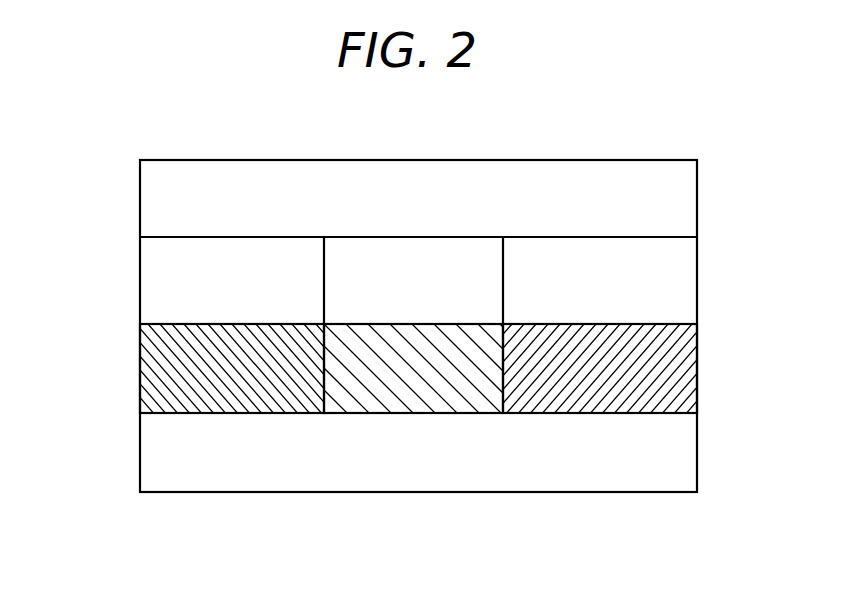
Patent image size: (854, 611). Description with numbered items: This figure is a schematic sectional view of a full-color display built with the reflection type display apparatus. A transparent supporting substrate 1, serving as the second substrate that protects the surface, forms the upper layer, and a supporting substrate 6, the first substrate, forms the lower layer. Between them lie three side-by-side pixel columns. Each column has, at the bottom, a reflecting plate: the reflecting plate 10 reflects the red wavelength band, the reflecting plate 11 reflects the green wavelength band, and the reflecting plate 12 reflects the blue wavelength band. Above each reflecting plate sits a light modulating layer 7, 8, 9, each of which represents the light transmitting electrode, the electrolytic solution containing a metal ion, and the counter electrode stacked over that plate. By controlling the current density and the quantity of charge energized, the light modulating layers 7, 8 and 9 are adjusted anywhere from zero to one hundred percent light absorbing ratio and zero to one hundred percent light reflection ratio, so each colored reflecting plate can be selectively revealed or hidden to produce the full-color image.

The supporting substrate 1 is at (682, 197).
The supporting substrate 6 is at (150, 453).
The light modulating layer 7 is at (150, 278).
The light modulating layer 8 is at (421, 260).
The light modulating layer 9 is at (682, 280).
The reflecting plate 10 is at (150, 367).
The reflecting plate 11 is at (404, 400).
The reflecting plate 12 is at (680, 372).